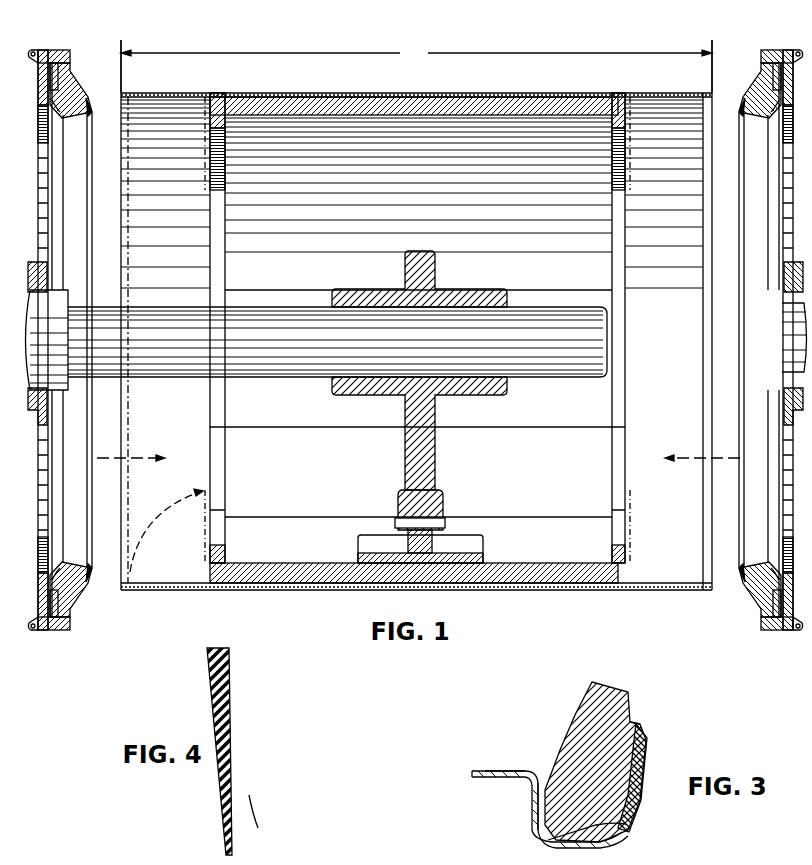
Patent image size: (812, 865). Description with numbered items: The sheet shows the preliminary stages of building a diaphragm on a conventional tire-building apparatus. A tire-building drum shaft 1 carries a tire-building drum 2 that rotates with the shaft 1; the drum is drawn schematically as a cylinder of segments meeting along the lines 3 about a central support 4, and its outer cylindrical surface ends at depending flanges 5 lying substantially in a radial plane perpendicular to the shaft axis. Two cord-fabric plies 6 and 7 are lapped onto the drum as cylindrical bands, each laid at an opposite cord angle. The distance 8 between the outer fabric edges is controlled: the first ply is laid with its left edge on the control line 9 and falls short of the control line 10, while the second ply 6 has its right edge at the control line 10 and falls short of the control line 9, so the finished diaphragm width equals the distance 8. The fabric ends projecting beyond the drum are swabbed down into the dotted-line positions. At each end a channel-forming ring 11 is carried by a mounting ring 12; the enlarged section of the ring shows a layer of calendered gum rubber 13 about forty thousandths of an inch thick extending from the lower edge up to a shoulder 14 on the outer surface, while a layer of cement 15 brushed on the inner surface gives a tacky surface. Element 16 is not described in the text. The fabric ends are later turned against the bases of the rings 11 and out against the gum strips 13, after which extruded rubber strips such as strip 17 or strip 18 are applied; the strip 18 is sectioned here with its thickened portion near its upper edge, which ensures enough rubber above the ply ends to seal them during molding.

In FIG. 1, the tire-building drum shaft 1 is at (534, 374).
In FIG. 1, the tire-building drum 2 is at (505, 105).
In FIG. 1, the segment lines 3 is at (296, 254).
In FIG. 1, the central support 4 is at (435, 273).
In FIG. 1, the depending flanges 5 is at (220, 100).
In FIG. 1, the second fabric ply 6 is at (160, 94).
In FIG. 3, the second fabric ply 6 is at (482, 770).
In FIG. 1, the first fabric ply 7 is at (135, 185).
In FIG. 3, the first fabric ply 7 is at (482, 777).
In FIG. 1, the distance between outer fabric edges 8 is at (416, 53).
In FIG. 1, the left control line 9 is at (121, 45).
In FIG. 1, the right control line 10 is at (712, 45).
In FIG. 1, the channel-forming ring 11 is at (75, 80).
In FIG. 3, the channel-forming ring 11 is at (576, 730).
In FIG. 1, the mounting ring 12 is at (52, 50).
In FIG. 1, the calendered gum rubber layer 13 is at (60, 108).
In FIG. 3, the calendered gum rubber layer 13 is at (592, 828).
In FIG. 1, the shoulder 14 is at (52, 599).
In FIG. 3, the shoulder 14 is at (638, 722).
In FIG. 1, the cement layer 15 is at (92, 106).
In FIG. 3, the cement layer 15 is at (537, 770).
In FIG. 1, the end cap 16 is at (66, 50).
In FIG. 3, the rubber strip 17 is at (646, 762).
In FIG. 4, the rubber strip 18 is at (232, 698).